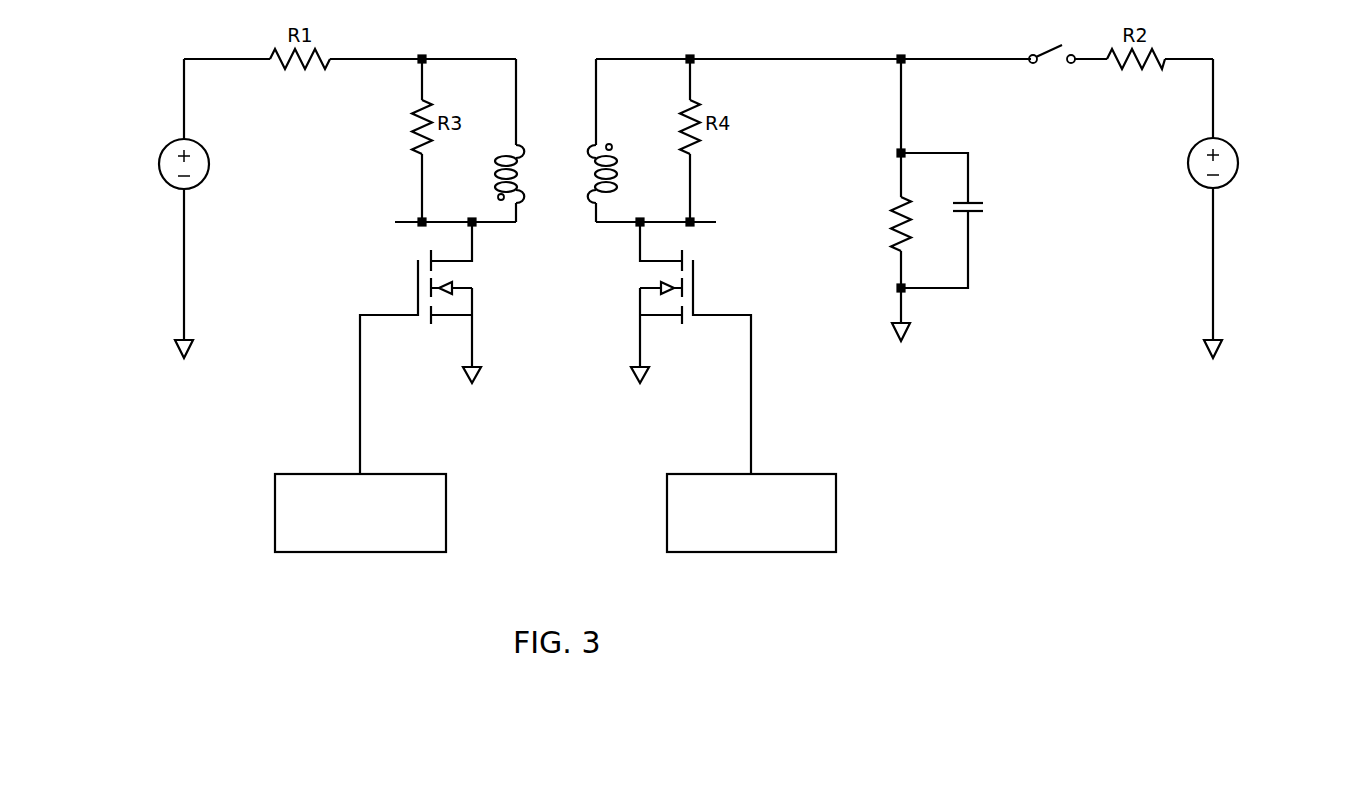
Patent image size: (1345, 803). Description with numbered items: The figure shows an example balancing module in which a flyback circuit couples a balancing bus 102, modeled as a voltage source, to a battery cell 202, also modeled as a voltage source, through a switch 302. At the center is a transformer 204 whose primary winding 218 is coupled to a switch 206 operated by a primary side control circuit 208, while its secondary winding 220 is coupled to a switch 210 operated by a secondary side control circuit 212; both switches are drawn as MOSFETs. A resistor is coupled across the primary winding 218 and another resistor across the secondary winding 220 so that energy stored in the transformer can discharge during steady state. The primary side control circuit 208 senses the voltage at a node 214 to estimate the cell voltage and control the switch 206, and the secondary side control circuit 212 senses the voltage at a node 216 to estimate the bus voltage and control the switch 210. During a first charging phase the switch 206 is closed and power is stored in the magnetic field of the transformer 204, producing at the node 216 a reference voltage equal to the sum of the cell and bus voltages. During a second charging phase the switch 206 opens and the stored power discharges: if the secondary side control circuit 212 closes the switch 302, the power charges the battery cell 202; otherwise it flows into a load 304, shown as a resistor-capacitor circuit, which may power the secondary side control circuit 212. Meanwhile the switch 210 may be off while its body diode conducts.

The balancing bus 102 is at (203, 148).
The battery cell 202 is at (1194, 146).
The transformer 204 is at (555, 124).
The switch 206 is at (499, 293).
The primary side control circuit 208 is at (382, 552).
The switch 210 is at (621, 295).
The secondary side control circuit 212 is at (767, 552).
The node 214 is at (476, 225).
The node 216 is at (693, 219).
The primary winding 218 is at (519, 138).
The secondary winding 220 is at (593, 208).
The switch 302 is at (1053, 74).
The load 304 is at (1010, 237).